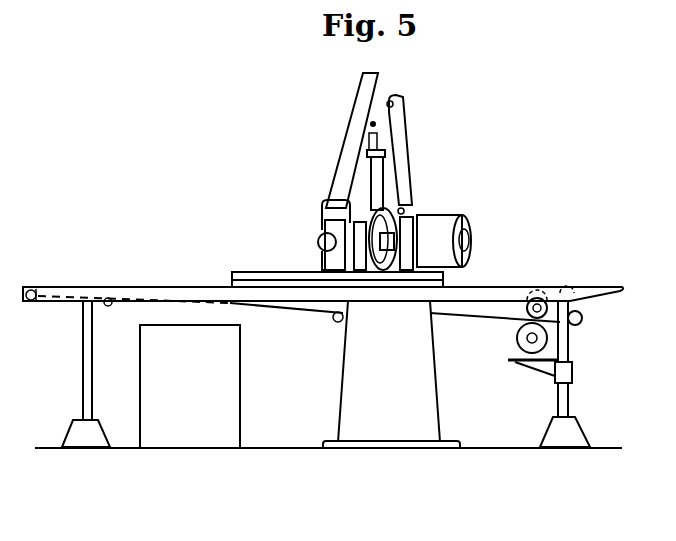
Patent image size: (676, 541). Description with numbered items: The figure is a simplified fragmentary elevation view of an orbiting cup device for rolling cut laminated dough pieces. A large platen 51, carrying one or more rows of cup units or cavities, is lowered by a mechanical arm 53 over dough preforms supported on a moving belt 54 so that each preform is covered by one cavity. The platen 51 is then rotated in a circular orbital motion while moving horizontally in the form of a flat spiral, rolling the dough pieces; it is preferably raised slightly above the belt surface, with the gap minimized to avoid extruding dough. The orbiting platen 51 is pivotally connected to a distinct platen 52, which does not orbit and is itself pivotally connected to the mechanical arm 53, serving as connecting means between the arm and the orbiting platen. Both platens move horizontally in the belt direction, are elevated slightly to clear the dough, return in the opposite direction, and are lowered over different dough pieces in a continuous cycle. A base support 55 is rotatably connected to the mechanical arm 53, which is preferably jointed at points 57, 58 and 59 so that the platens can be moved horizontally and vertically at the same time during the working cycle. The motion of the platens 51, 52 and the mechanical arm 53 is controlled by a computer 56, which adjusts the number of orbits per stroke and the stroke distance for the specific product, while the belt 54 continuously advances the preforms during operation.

The platen 51 is at (230, 285).
The platen 52 is at (270, 272).
The mechanical arm 53 is at (347, 99).
The belt 54 is at (150, 287).
The base support 55 is at (404, 384).
The computer 56 is at (206, 388).
The joint point 57 is at (345, 212).
The joint point 58 is at (393, 102).
The joint point 59 is at (408, 212).